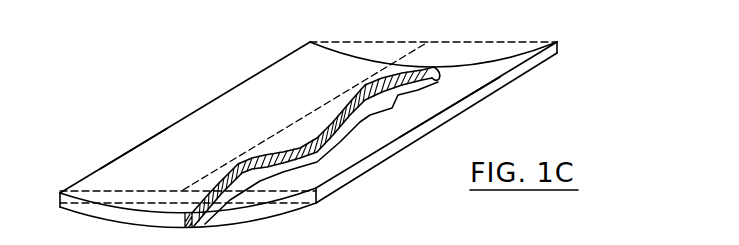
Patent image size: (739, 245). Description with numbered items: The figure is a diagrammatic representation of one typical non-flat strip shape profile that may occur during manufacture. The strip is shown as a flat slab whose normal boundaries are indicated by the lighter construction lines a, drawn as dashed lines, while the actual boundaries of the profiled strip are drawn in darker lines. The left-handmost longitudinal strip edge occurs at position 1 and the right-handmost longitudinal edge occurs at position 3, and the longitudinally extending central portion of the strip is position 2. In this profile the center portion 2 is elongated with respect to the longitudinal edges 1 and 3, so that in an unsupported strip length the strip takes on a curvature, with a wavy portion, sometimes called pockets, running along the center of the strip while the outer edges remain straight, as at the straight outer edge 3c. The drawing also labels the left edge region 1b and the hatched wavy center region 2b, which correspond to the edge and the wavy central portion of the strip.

The position of left-handmost longitudinal strip edge 1 is at (310, 42).
The side edge of first plate member 1b is at (167, 128).
The central portion of the strip 2 is at (431, 41).
The hatched top surface of wavy strip 2b is at (318, 137).
The position of right-handmost longitudinal strip edge 3 is at (557, 42).
The straight outer edge 3c is at (453, 112).
The construction lines a is at (153, 191).